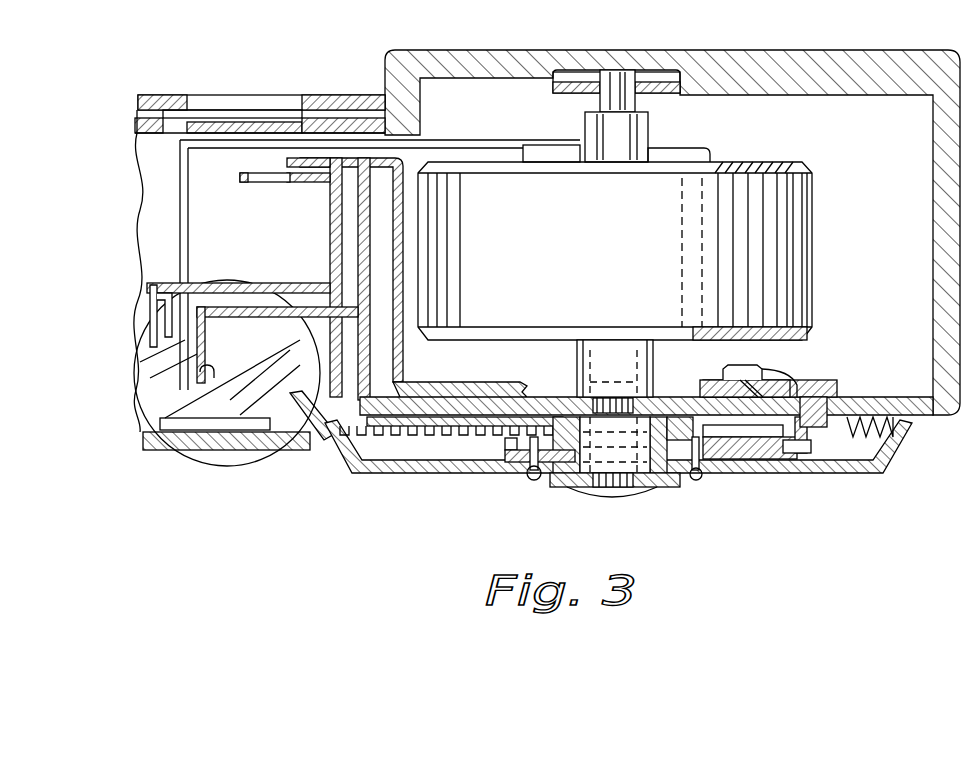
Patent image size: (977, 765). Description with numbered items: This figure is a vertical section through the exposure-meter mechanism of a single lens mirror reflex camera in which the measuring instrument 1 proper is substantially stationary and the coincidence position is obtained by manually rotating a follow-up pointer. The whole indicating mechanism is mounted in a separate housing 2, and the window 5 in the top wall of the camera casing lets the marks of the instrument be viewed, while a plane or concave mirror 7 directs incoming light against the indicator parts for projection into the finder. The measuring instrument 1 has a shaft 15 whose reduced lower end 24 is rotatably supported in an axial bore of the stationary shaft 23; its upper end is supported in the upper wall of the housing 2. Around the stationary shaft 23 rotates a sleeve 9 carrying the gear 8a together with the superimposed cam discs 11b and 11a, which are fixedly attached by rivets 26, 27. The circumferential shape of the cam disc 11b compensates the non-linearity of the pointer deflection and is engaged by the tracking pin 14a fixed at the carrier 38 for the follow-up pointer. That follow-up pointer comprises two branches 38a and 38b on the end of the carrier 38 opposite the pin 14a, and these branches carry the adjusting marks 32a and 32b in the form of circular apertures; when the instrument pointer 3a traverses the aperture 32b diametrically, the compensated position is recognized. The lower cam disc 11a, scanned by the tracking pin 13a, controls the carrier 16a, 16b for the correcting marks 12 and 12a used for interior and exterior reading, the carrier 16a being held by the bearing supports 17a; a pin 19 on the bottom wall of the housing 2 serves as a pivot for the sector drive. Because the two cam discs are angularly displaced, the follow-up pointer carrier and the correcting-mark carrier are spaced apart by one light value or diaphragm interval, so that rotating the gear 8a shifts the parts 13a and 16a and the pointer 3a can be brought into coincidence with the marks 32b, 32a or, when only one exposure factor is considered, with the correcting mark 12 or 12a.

The measuring instrument 1 is at (750, 180).
The housing 2 is at (735, 65).
The instrument pointer 3a is at (180, 203).
The window 5 is at (195, 120).
The mirror 7 is at (150, 395).
The gear 8a is at (342, 435).
The sleeve 9 is at (668, 487).
The lower cam disc 11a is at (748, 440).
The cam disc 11b is at (502, 445).
The correcting mark 12 is at (300, 157).
The correcting mark 12a is at (152, 303).
The tracking pin 13a is at (799, 455).
The tracking pin 14a is at (737, 437).
The shaft 15 is at (585, 362).
The carrier 16a is at (238, 292).
The carrier 16b is at (361, 160).
The bearing support 17a is at (733, 415).
The pin 19 is at (826, 418).
The stationary shaft 23 is at (587, 480).
The reduced lower end 24 is at (620, 397).
The rivet 26 is at (531, 480).
The rivet 27 is at (705, 480).
The adjusting mark 32a is at (262, 183).
The adjusting mark 32b is at (212, 367).
The carrier 38 is at (420, 422).
The branch of follow-up pointer 38a is at (288, 308).
The branch of follow-up pointer 38b is at (305, 185).